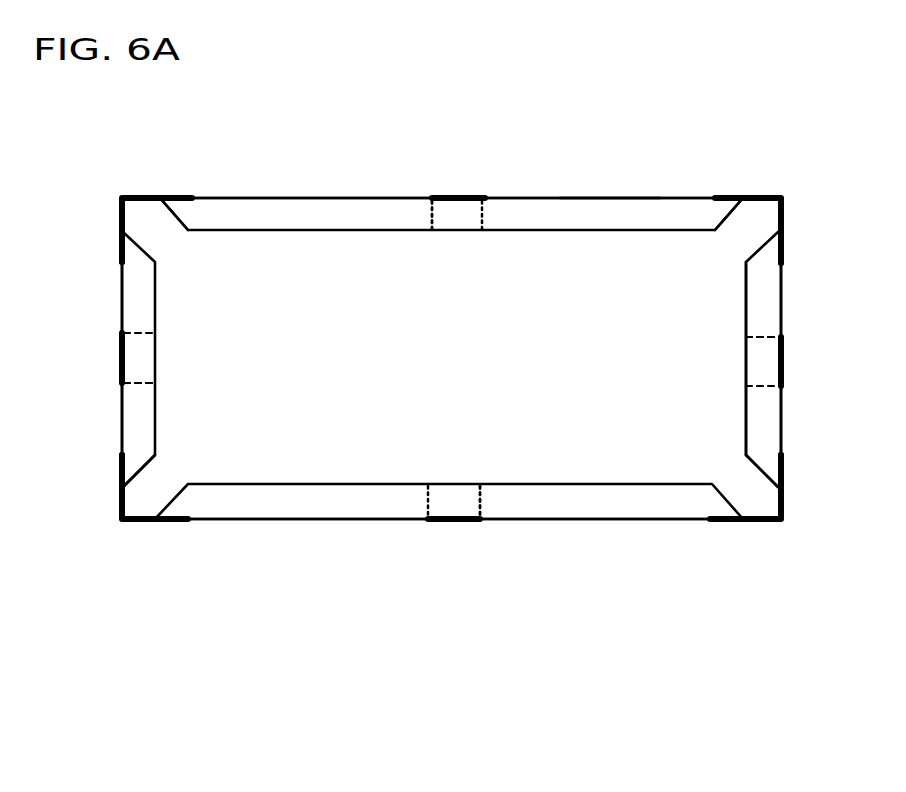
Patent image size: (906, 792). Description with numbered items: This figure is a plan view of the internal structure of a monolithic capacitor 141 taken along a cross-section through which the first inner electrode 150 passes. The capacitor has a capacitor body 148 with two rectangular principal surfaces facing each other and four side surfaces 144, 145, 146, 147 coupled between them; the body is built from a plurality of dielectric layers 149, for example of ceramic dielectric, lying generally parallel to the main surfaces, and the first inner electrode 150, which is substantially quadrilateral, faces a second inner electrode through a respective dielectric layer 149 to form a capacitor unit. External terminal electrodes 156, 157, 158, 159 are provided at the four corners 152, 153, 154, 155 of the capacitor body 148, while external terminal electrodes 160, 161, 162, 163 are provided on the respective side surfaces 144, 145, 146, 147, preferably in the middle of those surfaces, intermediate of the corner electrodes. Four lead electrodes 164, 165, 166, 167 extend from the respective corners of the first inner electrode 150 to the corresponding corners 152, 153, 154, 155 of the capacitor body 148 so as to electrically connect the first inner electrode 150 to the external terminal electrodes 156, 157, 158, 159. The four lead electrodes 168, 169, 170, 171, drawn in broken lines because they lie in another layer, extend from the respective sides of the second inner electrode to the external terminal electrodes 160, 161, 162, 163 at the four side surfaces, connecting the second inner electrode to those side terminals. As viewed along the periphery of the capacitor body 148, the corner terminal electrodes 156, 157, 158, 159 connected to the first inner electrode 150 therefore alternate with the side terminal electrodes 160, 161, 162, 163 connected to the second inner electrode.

The monolithic capacitor 141 is at (100, 162).
The side surface 144 is at (289, 198).
The side surface 145 is at (784, 423).
The side surface 146 is at (283, 519).
The side surface 147 is at (121, 283).
The capacitor body 148 is at (612, 196).
The dielectric layer 149 is at (531, 212).
The first inner electrode 150 is at (752, 290).
The corner of the capacitor body 152 is at (140, 197).
The corner of the capacitor body 153 is at (766, 197).
The corner of the capacitor body 154 is at (760, 521).
The corner of the capacitor body 155 is at (135, 521).
The external terminal electrode 156 is at (122, 222).
The external terminal electrode 157 is at (784, 228).
The external terminal electrode 158 is at (783, 503).
The external terminal electrode 159 is at (122, 492).
The external terminal electrode 160 is at (452, 196).
The external terminal electrode 161 is at (784, 364).
The external terminal electrode 162 is at (450, 521).
The external terminal electrode 163 is at (121, 352).
The lead electrode 164 is at (167, 220).
The lead electrode 165 is at (733, 222).
The lead electrode 166 is at (750, 487).
The lead electrode 167 is at (152, 462).
The lead electrode 168 is at (432, 212).
The lead electrode 169 is at (762, 336).
The lead electrode 170 is at (480, 497).
The lead electrode 171 is at (125, 390).